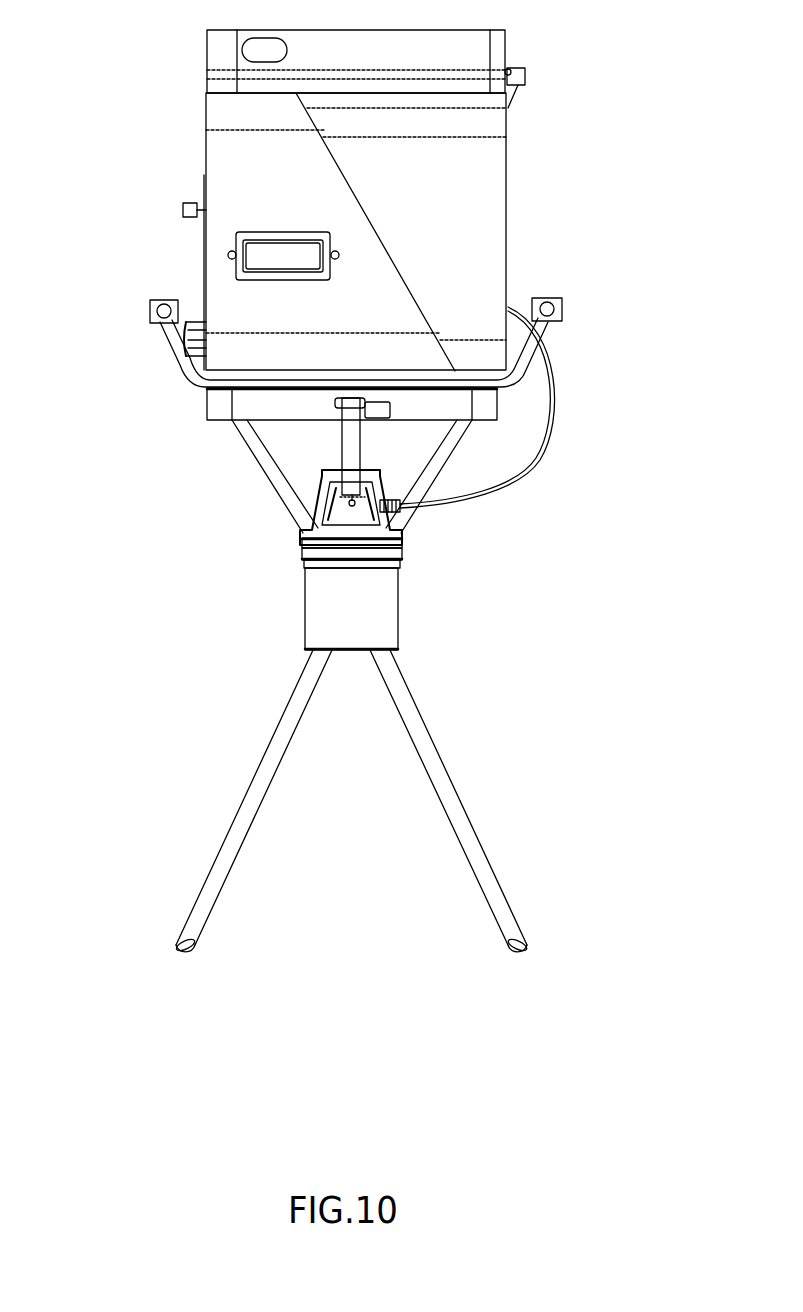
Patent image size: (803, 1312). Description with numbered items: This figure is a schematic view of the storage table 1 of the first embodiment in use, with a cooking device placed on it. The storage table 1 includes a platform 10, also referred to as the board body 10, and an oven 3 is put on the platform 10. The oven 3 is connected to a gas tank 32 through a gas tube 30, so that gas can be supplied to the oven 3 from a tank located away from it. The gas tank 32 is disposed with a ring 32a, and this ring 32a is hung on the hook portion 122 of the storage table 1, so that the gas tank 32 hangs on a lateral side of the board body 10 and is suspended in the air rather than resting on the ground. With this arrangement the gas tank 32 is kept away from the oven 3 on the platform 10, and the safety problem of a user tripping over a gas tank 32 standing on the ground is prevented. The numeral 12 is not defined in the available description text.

The storage table 1 is at (172, 387).
The oven 3 is at (480, 190).
The platform 10 is at (213, 403).
The base plate 12 is at (293, 400).
The hook portion 122 is at (367, 420).
The gas tube 30 is at (527, 470).
The gas tank 32 is at (372, 607).
The ring 32a is at (352, 457).